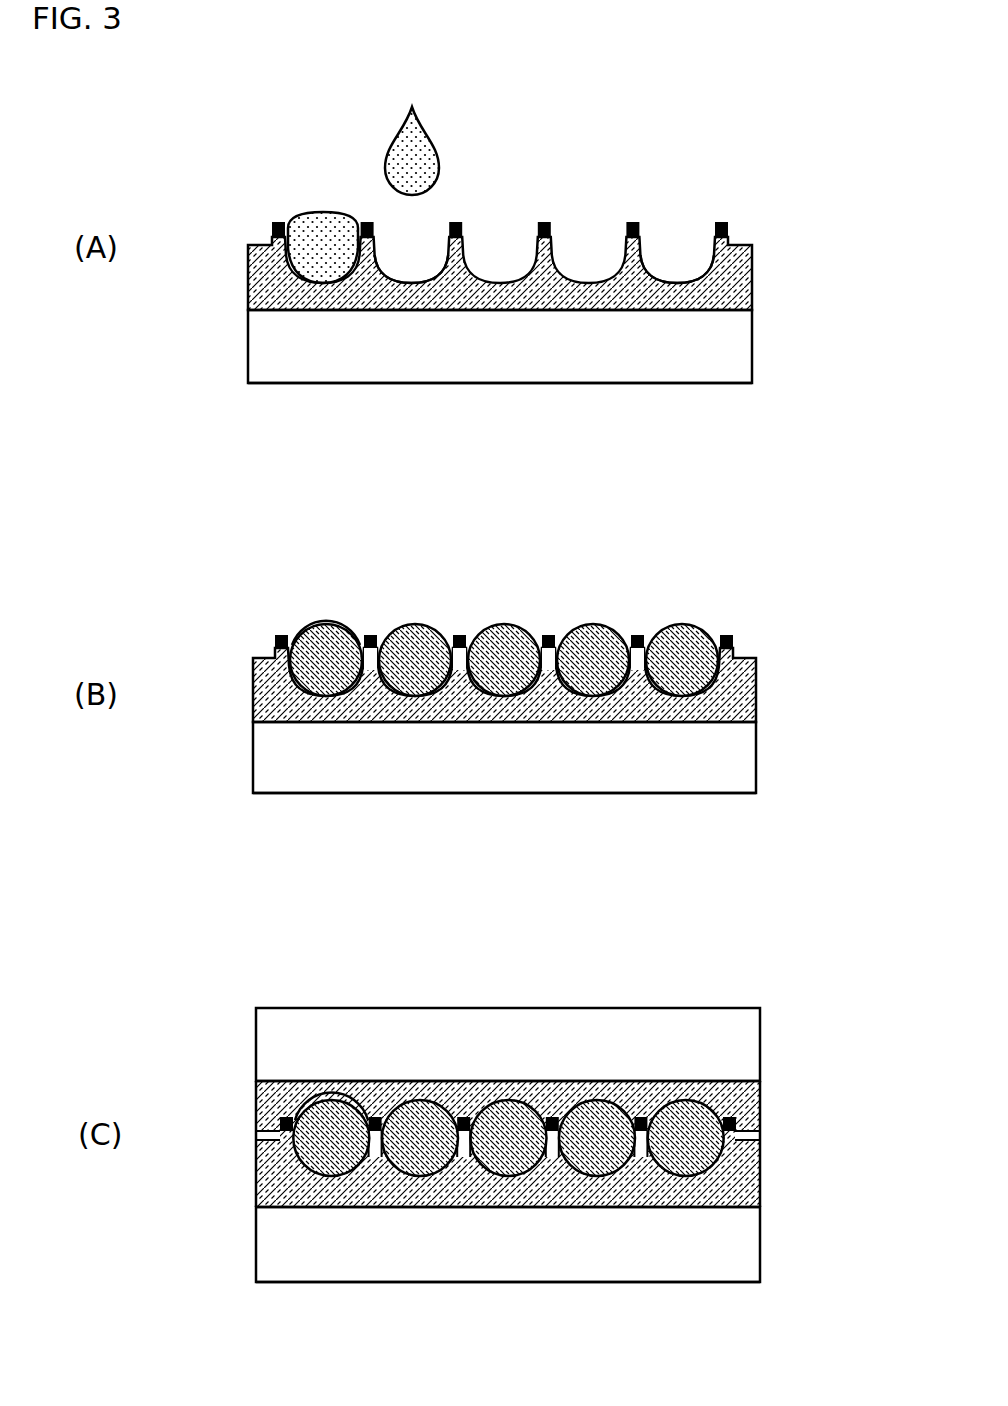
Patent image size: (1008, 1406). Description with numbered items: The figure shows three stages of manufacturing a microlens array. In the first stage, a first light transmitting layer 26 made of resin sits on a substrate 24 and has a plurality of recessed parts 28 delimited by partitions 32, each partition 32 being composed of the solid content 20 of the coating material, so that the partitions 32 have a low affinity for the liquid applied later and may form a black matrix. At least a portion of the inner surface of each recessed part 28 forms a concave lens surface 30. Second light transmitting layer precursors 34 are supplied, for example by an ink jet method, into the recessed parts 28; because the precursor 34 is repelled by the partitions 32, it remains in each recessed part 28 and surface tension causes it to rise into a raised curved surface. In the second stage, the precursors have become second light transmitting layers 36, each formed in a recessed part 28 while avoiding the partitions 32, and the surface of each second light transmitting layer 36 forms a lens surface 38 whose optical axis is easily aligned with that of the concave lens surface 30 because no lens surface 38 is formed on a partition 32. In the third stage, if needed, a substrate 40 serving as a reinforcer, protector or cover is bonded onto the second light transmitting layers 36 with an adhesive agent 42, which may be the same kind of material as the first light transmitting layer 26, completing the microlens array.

The solid content 20 is at (728, 227).
The substrate 24 is at (742, 345).
The first light transmitting layer 26 is at (755, 270).
The recessed part 28 is at (412, 240).
The lens surface 30 is at (680, 283).
The partition 32 is at (722, 222).
The second light transmitting layer precursor 34 is at (320, 212).
The second light transmitting layer 36 is at (343, 632).
The lens surface 38 is at (330, 622).
The substrate 40 is at (750, 1038).
The adhesive agent 42 is at (713, 1083).